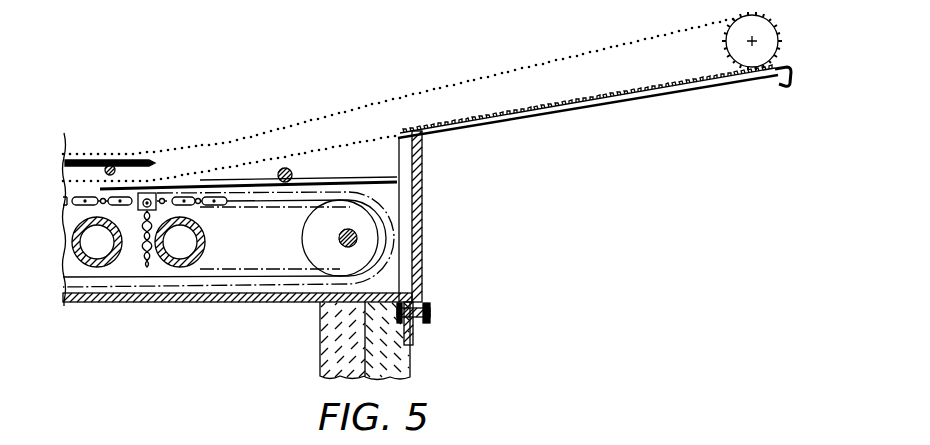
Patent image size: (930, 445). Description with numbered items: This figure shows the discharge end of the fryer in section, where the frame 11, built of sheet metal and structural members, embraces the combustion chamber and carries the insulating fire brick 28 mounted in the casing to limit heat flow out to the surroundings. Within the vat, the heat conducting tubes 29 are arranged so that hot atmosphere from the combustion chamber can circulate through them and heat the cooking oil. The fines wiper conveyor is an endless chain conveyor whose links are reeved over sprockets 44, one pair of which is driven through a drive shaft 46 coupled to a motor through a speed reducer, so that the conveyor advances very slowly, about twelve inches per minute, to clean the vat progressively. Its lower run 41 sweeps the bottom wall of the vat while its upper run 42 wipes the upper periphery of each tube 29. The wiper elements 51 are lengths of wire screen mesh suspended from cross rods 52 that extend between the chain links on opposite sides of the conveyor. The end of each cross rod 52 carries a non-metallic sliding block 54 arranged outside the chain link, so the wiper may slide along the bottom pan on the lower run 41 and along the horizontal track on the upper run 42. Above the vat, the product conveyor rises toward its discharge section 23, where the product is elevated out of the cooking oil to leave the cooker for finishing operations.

The frame 11 is at (419, 351).
The discharge section 23 is at (403, 97).
The insulating fire brick 28 is at (320, 344).
The heat conducting tubes 29 is at (95, 268).
The lower run 41 is at (218, 277).
The upper run 42 is at (315, 192).
The sprockets 44 is at (302, 237).
The drive shaft 46 is at (356, 234).
The wiper elements 51 is at (148, 266).
The cross rods 52 is at (145, 199).
The sliding block 54 is at (150, 201).